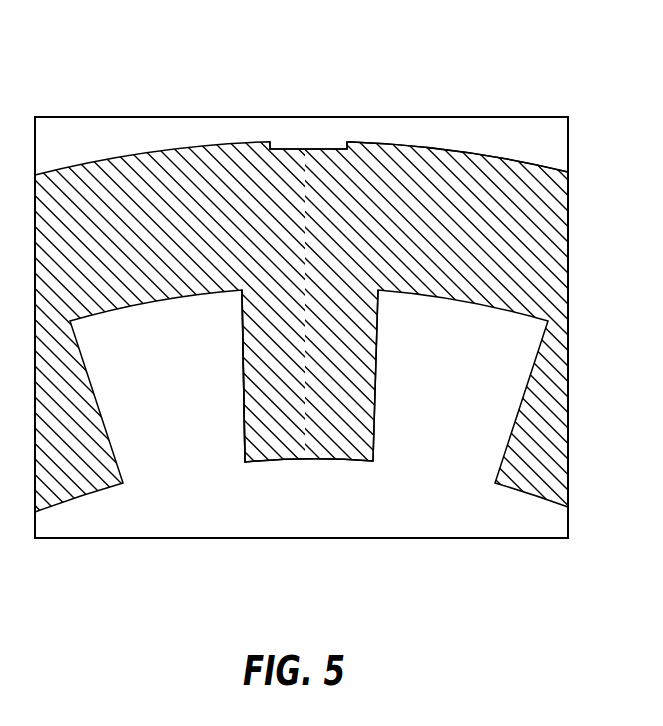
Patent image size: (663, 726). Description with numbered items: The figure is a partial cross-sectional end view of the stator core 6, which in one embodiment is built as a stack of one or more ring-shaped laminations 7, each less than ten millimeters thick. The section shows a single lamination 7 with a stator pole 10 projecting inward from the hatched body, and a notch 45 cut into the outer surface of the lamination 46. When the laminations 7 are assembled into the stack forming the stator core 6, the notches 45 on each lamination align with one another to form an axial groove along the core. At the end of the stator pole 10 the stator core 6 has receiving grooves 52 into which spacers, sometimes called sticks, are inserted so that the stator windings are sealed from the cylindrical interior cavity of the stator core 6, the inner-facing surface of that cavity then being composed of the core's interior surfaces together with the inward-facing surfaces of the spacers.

The stator core 6 is at (331, 320).
The lamination 7 is at (528, 268).
The stator pole 10 is at (328, 408).
The notch 45 is at (307, 136).
The outer surface of the lamination 46 is at (503, 157).
The receiving groove 52 is at (242, 430).